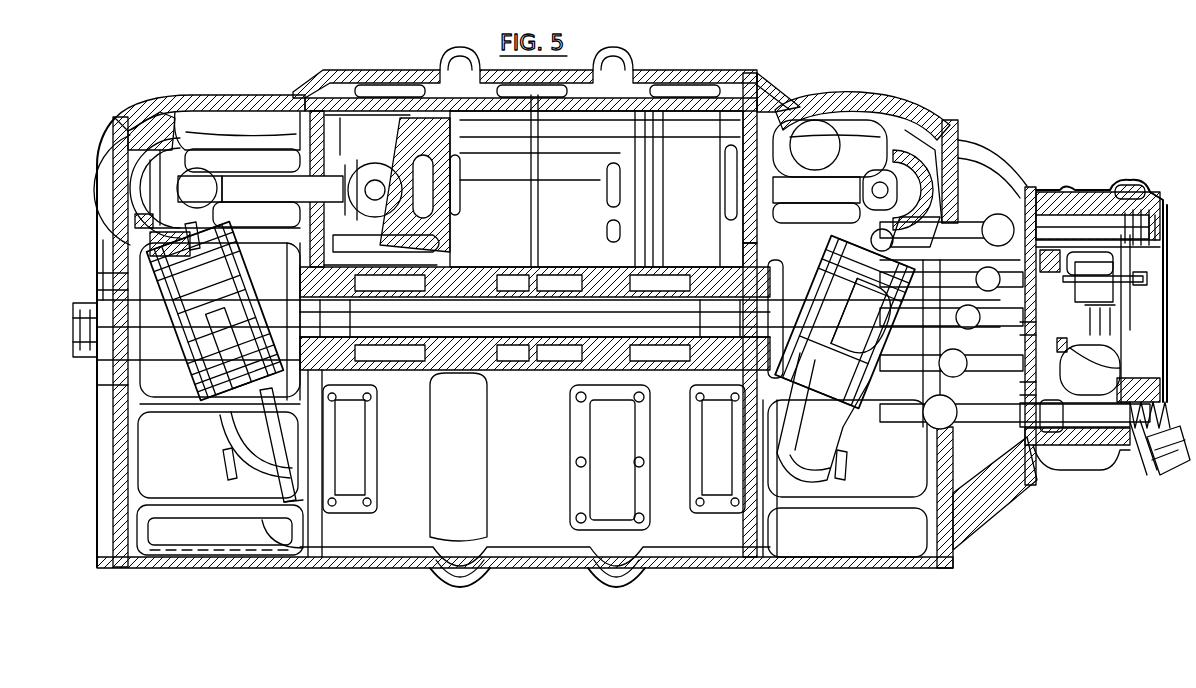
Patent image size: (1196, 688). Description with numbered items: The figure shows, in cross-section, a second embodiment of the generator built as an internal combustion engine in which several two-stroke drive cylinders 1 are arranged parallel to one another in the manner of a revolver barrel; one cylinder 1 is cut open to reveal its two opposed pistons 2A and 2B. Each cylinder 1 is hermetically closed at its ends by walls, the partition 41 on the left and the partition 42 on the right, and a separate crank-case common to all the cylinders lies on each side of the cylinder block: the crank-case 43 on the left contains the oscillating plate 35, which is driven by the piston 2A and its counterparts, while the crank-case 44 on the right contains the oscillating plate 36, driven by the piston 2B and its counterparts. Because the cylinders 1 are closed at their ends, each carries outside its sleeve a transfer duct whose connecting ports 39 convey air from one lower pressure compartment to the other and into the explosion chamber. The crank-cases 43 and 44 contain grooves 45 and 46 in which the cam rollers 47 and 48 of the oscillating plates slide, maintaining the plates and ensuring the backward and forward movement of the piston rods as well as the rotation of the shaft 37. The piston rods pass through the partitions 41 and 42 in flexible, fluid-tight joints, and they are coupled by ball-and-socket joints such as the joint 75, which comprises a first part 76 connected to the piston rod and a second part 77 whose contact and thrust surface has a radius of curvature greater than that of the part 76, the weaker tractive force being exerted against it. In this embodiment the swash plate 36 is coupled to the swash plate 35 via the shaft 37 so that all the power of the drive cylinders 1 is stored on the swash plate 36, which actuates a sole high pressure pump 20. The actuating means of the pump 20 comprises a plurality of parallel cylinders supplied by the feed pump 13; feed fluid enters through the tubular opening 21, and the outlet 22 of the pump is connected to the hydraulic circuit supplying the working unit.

The cylinder 1 is at (507, 78).
The piston 2A is at (418, 152).
The piston 2B is at (685, 138).
The feed pump 13 is at (1128, 362).
The high pressure pump 20 is at (1087, 227).
The tubular opening 21 is at (818, 158).
The outlet 22 is at (1155, 472).
The oscillating plate 35 is at (148, 136).
The oscillating plate 36 is at (947, 170).
The shaft 37 is at (528, 310).
The connecting ports 39 is at (348, 492).
The partition 41 is at (292, 76).
The partition 42 is at (783, 92).
The crank-case 43 is at (210, 96).
The crank-case 44 is at (912, 130).
The groove 45 is at (240, 128).
The groove 46 is at (855, 130).
The cam roller 47 is at (187, 127).
The cam roller 48 is at (927, 120).
The ball-and-socket joint 75 is at (128, 187).
The first part 76 is at (235, 187).
The second part 77 is at (145, 221).